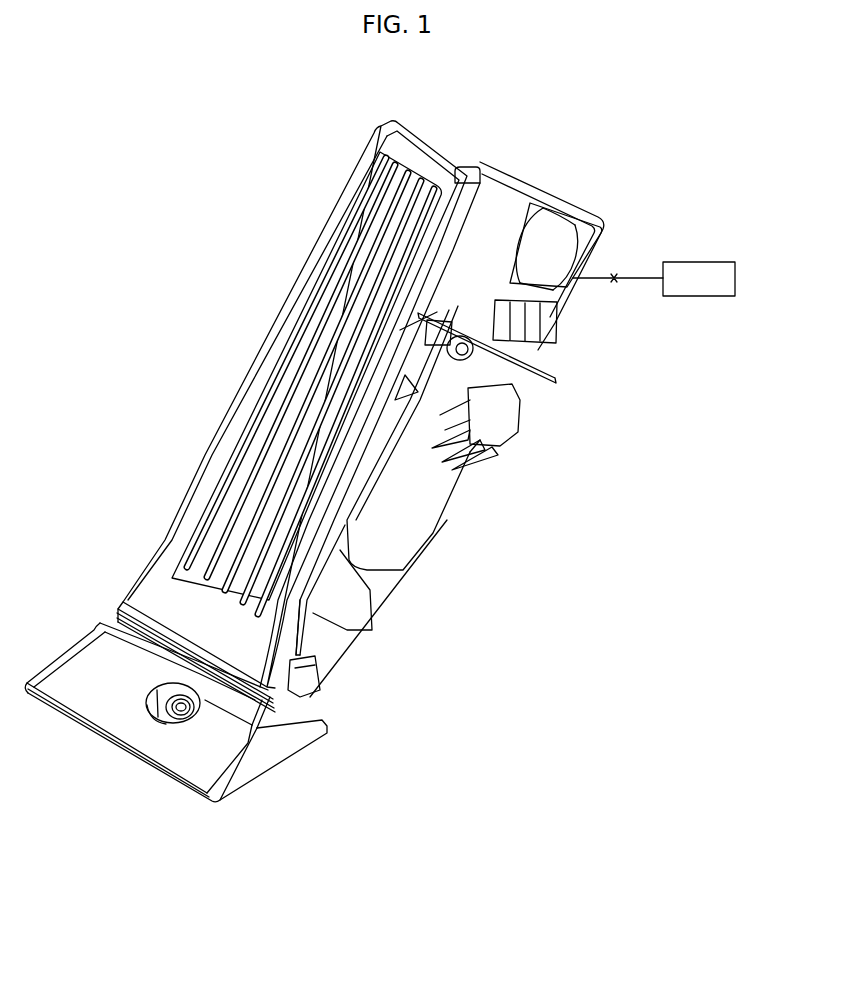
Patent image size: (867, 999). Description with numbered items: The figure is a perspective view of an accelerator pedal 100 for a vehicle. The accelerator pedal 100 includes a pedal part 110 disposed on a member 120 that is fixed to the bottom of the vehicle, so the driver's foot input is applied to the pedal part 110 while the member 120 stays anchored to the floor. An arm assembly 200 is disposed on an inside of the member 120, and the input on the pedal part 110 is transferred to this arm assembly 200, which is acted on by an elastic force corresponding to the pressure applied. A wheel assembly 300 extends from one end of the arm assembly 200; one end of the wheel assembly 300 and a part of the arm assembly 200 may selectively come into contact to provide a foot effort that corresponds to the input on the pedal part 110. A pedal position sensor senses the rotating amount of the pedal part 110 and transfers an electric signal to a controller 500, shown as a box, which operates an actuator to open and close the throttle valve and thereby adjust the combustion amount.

The accelerator pedal 100 is at (222, 257).
The pedal part 110 is at (207, 470).
The member 120 is at (287, 752).
The arm assembly 200 is at (411, 527).
The wheel assembly 300 is at (565, 245).
The controller 500 is at (714, 262).